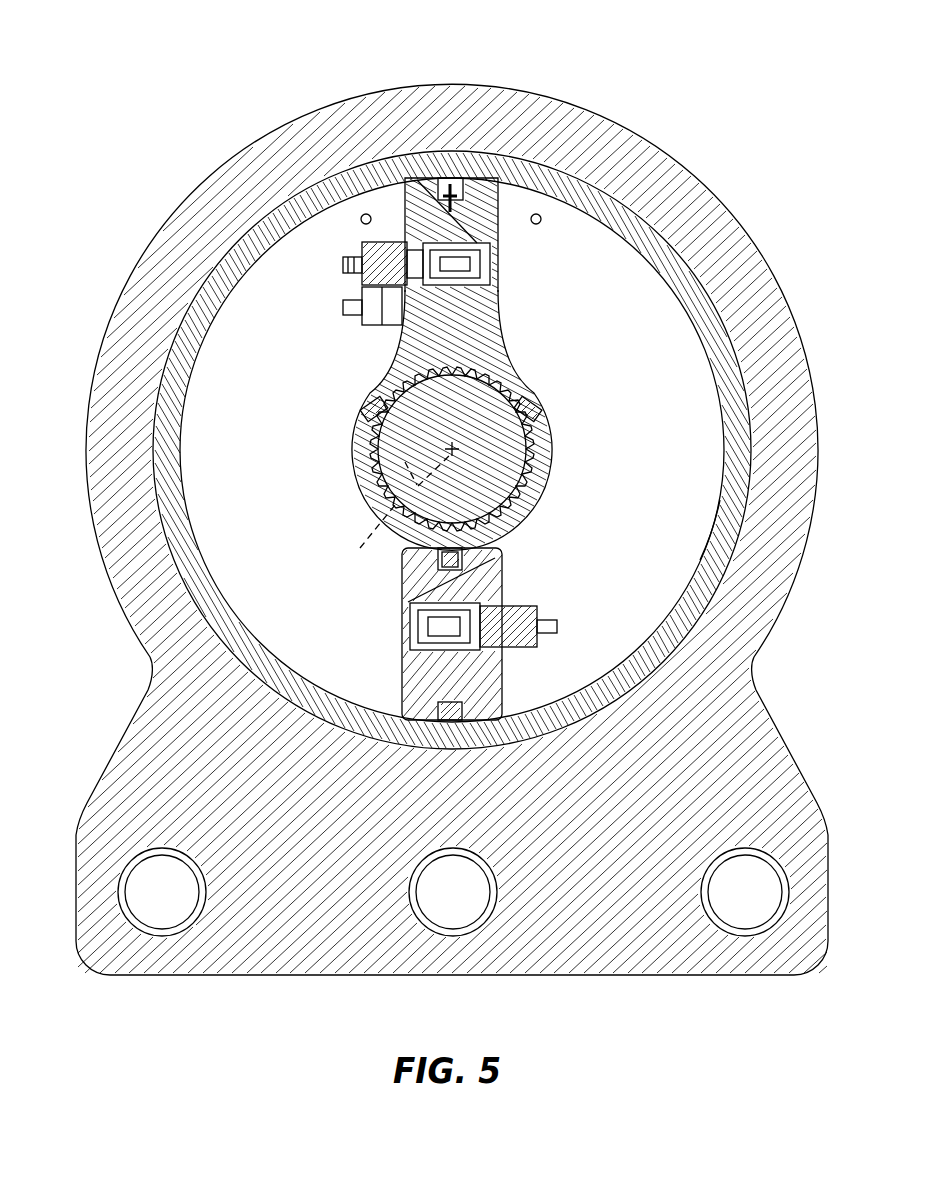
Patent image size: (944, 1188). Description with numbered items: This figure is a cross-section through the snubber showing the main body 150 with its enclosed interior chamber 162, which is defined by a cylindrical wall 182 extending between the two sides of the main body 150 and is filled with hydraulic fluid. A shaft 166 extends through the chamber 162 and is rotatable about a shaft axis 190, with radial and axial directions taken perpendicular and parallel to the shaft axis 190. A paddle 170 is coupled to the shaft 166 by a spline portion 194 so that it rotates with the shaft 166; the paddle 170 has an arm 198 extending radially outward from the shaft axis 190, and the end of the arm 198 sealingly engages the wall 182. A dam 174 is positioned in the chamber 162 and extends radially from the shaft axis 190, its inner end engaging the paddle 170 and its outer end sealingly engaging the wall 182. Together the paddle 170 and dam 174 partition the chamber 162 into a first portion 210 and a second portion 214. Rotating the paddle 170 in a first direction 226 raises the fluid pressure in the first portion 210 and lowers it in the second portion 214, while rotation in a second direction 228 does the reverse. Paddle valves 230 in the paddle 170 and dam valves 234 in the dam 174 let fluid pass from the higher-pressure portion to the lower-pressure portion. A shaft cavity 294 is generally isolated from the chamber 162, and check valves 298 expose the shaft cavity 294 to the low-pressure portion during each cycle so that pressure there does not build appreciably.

The main body 150 is at (762, 300).
The chamber 162 is at (676, 288).
The shaft 166 is at (400, 470).
The paddle 170 is at (553, 253).
The dam 174 is at (383, 668).
The wall 182 is at (706, 546).
The shaft axis 190 is at (400, 525).
The spline portion 194 is at (372, 462).
The arm 198 is at (505, 178).
The first portion 210 is at (692, 405).
The second portion 214 is at (240, 547).
The first direction 226 is at (348, 63).
The second direction 228 is at (368, 42).
The paddle valves 230 is at (372, 292).
The dam valves 234 is at (500, 607).
The shaft cavity 294 is at (515, 515).
The check valves 298 is at (365, 410).